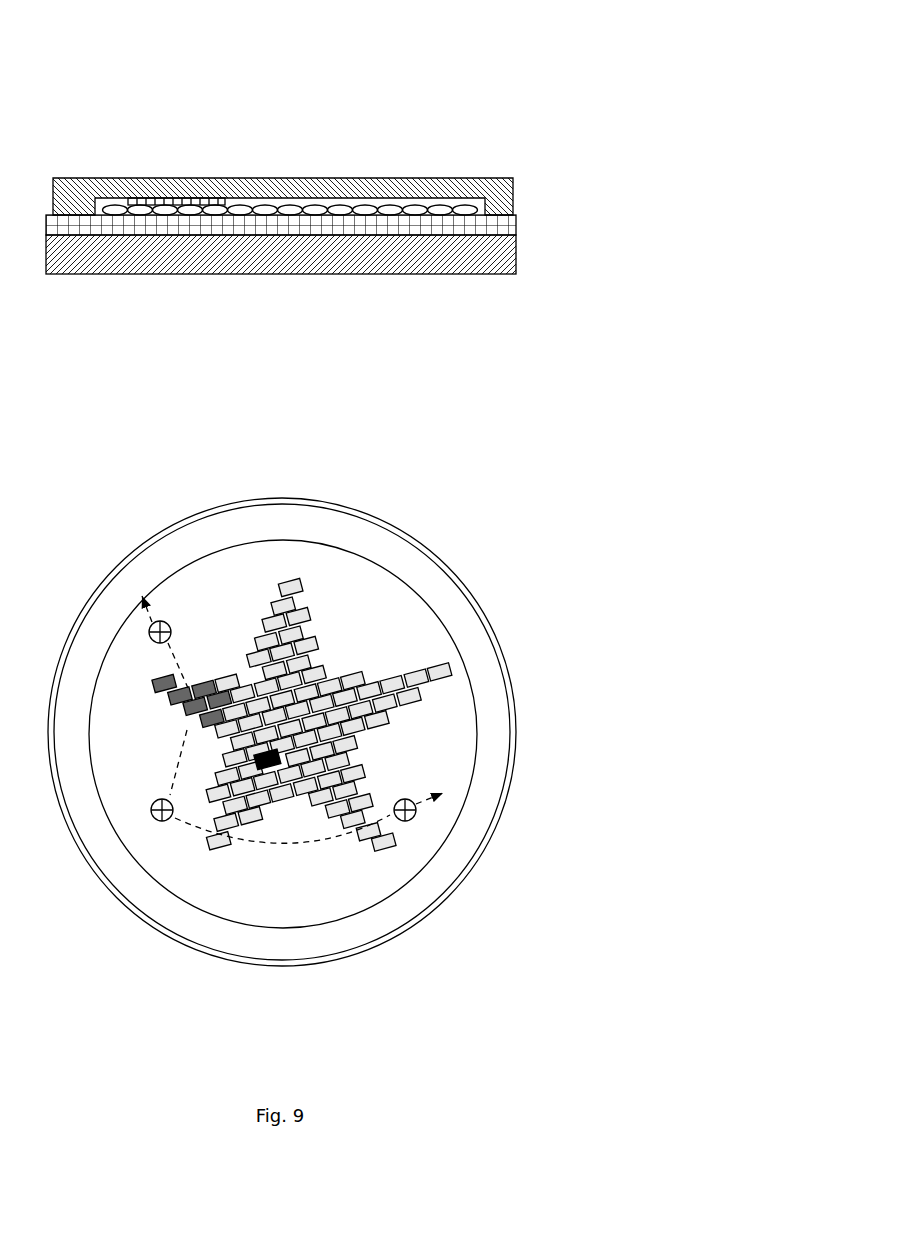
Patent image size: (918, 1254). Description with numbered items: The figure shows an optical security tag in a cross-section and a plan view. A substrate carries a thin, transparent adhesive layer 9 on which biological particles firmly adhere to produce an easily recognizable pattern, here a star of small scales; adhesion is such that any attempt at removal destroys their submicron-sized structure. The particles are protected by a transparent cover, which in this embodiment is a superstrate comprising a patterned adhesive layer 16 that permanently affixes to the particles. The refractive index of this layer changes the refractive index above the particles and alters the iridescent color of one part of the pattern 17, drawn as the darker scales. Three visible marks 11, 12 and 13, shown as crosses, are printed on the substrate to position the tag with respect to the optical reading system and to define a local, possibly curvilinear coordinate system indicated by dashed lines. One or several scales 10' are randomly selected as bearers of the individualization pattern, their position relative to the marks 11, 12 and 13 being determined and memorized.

The adhesive layer 9 is at (526, 226).
The selected particles 10' is at (345, 634).
The visible mark 11 is at (163, 612).
The visible mark 12 is at (163, 831).
The visible mark 13 is at (406, 831).
The patterned adhesive layer 16 is at (175, 204).
The part of the pattern 17 is at (196, 686).